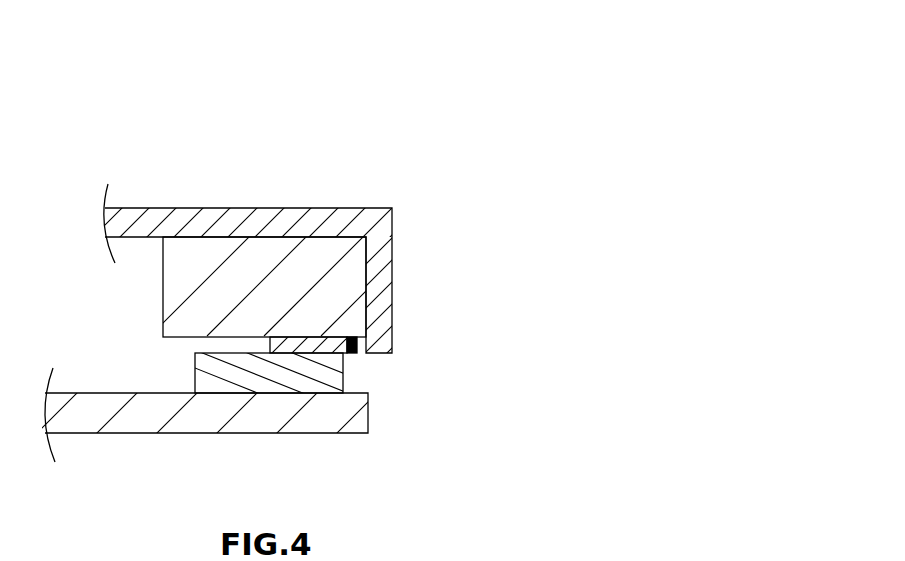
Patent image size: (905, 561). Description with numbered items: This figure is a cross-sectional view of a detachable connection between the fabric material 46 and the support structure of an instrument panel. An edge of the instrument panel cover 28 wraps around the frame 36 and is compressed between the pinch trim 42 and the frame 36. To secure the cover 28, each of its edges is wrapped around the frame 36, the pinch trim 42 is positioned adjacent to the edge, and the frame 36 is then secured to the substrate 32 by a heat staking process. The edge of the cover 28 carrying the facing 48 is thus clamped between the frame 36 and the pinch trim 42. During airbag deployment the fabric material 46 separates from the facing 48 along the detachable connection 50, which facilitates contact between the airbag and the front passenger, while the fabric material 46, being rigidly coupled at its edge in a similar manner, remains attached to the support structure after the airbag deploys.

The instrument panel cover 28 is at (466, 170).
The fabric material 46 is at (257, 210).
The frame 36 is at (175, 313).
The facing 48 is at (334, 338).
The detachable connection 50 is at (358, 354).
The pinch trim 42 is at (312, 386).
The substrate 32 is at (203, 417).